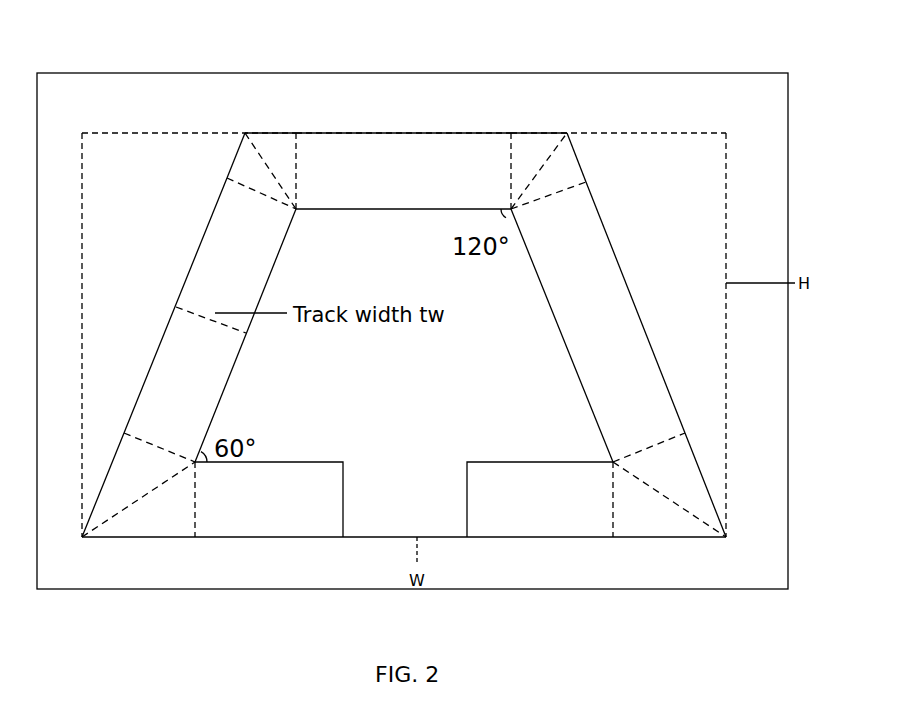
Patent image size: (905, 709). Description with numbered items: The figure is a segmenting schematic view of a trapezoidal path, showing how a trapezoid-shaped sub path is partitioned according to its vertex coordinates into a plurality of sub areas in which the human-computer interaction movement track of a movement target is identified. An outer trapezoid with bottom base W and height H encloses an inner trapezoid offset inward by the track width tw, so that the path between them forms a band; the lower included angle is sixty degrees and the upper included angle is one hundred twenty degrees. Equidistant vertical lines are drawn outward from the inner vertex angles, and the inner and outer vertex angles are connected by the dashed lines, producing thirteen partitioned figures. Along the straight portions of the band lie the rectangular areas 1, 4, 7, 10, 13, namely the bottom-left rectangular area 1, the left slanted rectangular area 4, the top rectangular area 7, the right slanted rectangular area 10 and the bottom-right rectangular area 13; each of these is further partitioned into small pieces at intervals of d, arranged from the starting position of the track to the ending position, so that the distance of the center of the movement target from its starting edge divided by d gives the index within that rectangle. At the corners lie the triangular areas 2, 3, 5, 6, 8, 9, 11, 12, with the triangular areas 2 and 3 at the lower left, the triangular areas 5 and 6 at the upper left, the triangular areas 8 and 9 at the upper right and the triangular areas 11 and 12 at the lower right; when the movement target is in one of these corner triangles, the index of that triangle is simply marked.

The rectangular area 1 is at (269, 499).
The triangular area 2 is at (138, 499).
The triangular area 3 is at (138, 485).
The rectangular area 4 is at (210, 320).
The triangular area 5 is at (261, 171).
The triangular area 6 is at (270, 171).
The rectangular area 7 is at (403, 171).
The triangular area 8 is at (539, 171).
The triangular area 9 is at (548, 171).
The rectangular area 10 is at (598, 322).
The triangular area 11 is at (669, 485).
The triangular area 12 is at (669, 499).
The rectangular area 13 is at (540, 499).